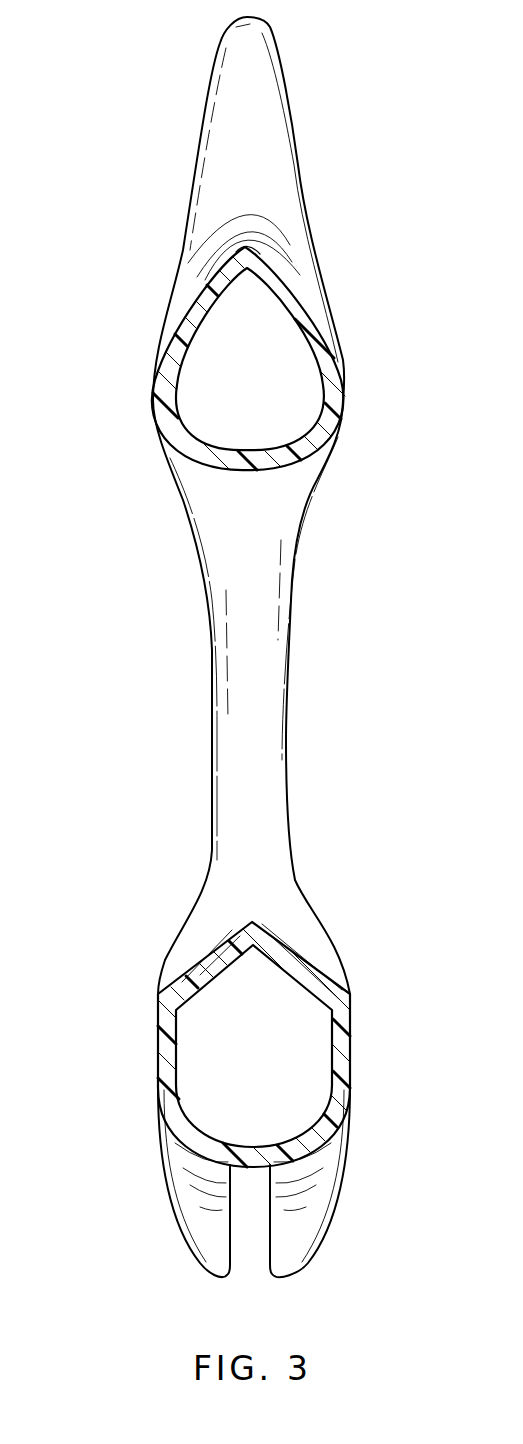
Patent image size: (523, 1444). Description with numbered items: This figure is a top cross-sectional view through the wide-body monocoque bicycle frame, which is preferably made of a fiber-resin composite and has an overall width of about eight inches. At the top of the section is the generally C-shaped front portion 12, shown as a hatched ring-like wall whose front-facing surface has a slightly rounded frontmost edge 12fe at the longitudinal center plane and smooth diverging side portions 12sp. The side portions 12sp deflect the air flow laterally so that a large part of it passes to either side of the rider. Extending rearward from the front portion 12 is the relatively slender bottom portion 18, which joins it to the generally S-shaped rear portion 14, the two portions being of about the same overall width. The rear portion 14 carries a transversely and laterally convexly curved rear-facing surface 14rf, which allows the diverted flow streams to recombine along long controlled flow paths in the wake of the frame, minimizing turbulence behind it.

The front portion 12 is at (247, 299).
The side portions 12sp is at (183, 317).
The frontmost edge 12fe is at (252, 250).
The bottom portion 18 is at (287, 725).
The rear portion 14 is at (304, 1062).
The rear-facing surface 14rf is at (330, 1143).